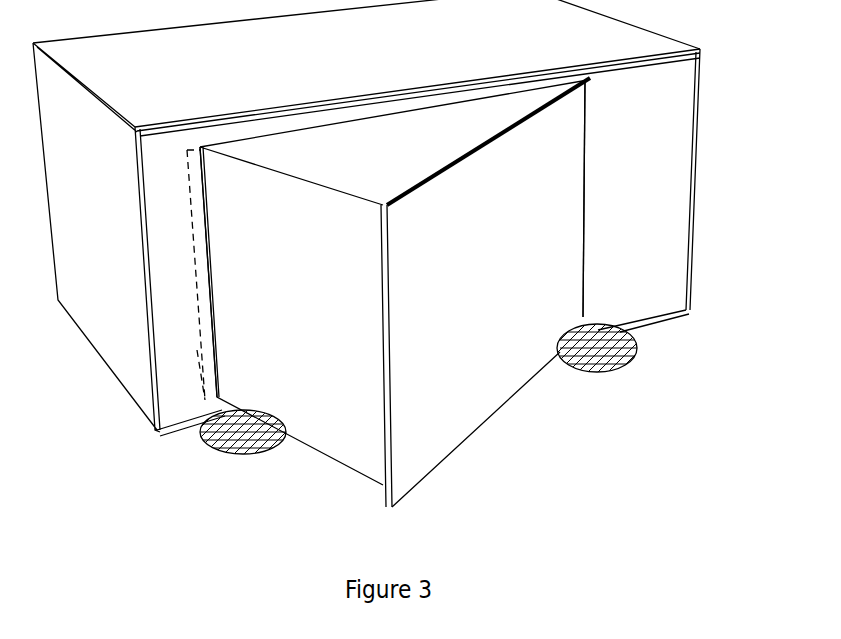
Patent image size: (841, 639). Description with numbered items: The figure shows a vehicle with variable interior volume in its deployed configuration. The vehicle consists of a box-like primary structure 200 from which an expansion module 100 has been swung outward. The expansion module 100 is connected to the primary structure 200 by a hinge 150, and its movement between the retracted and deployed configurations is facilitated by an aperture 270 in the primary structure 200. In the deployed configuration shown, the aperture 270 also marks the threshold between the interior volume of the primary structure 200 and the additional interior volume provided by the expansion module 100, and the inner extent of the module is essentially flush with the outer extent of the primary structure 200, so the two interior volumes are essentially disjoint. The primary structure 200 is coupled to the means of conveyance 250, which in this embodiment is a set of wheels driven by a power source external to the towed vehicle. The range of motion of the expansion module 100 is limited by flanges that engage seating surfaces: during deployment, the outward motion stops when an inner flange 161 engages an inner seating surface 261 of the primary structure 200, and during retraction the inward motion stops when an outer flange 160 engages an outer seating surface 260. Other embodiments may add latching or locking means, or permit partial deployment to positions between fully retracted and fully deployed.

The expansion module 100 is at (458, 352).
The hinge 150 is at (585, 183).
The outer flange 160 is at (380, 297).
The inner flange 161 is at (197, 350).
The primary structure 200 is at (628, 267).
The means of conveyance 250 is at (607, 367).
The outer seating surface 260 is at (203, 268).
The inner seating surface 261 is at (187, 200).
The aperture 270 is at (330, 128).